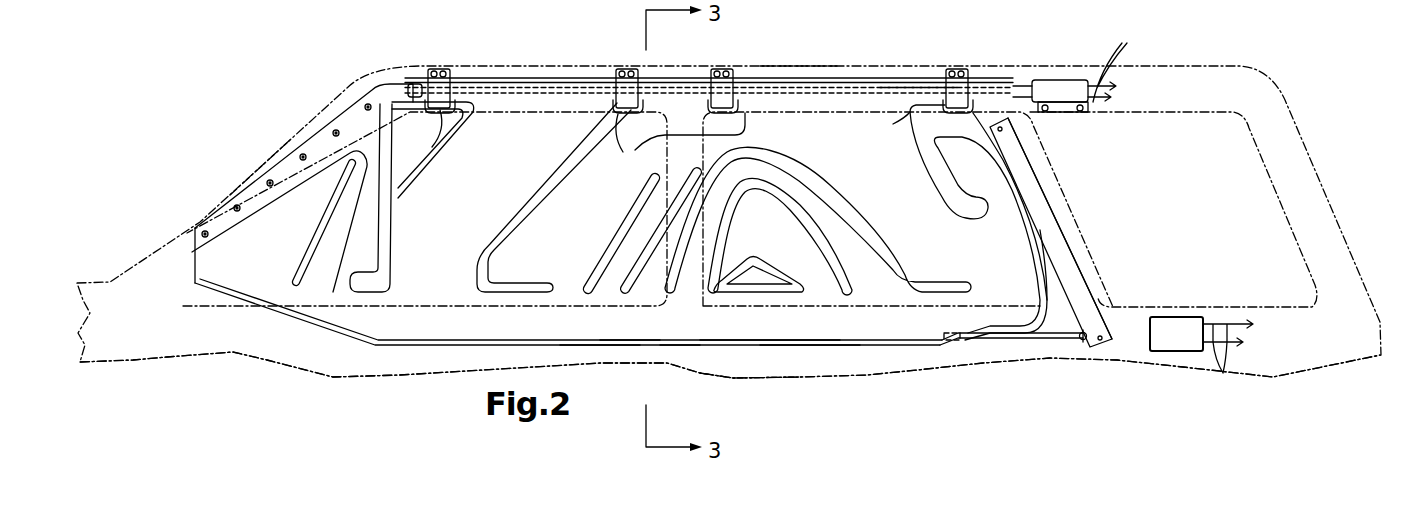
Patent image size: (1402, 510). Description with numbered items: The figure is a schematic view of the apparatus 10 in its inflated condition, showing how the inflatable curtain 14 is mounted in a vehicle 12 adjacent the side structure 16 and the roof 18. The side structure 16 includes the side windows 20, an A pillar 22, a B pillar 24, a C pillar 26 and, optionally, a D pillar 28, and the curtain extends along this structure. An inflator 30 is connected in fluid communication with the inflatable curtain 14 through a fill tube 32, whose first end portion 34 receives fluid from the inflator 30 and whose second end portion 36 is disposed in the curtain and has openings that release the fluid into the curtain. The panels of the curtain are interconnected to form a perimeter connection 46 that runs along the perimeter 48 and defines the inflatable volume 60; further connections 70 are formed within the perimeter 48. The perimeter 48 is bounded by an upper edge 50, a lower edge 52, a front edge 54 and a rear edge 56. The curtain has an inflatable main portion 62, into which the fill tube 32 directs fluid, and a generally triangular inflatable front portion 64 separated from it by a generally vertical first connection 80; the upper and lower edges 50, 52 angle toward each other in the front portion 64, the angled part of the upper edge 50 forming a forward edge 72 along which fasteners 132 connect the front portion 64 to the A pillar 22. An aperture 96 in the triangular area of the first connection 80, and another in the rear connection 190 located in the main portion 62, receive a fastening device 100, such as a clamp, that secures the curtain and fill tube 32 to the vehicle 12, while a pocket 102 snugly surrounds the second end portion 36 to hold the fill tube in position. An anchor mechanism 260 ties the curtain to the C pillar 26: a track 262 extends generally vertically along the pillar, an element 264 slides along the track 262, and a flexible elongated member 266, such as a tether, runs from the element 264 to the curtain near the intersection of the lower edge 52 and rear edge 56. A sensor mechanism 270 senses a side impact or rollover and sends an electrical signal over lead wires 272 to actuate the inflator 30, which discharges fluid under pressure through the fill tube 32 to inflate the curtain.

The apparatus 10 is at (686, 216).
The vehicle 12 is at (285, 110).
The inflatable curtain 14 is at (523, 126).
The side structure 16 is at (753, 358).
The roof 18 is at (797, 65).
The side windows 20 is at (466, 278).
The A pillar 22 is at (262, 166).
The B pillar 24 is at (670, 232).
The C pillar 26 is at (1068, 215).
The D pillar 28 is at (1280, 165).
The inflator 30 is at (1062, 88).
The fill tube 32 is at (899, 86).
The first end portion 34 is at (1025, 85).
The second end portion 36 is at (562, 84).
The perimeter connection 46 is at (601, 345).
The perimeter 48 is at (627, 341).
The upper edge 50 is at (683, 77).
The lower edge 52 is at (675, 346).
The front edge 54 is at (193, 250).
The rear edge 56 is at (1008, 173).
The inflatable volume 60 is at (771, 321).
The main portion 62 is at (801, 318).
The front portion 64 is at (292, 266).
The connections 70 is at (380, 243).
The forward edge 72 is at (435, 168).
The first connection 80 is at (378, 263).
The aperture 96 is at (672, 140).
The fastening device 100 is at (441, 68).
The pocket 102 is at (414, 83).
The fastener 132 is at (303, 154).
The rear connection 190 is at (943, 176).
The anchor mechanism 260 is at (1060, 245).
The track 262 is at (1070, 277).
The element 264 is at (1083, 343).
The flexible elongated member 266 is at (1054, 338).
The sensor mechanism 270 is at (1175, 352).
The lead wires 272 is at (1173, 216).